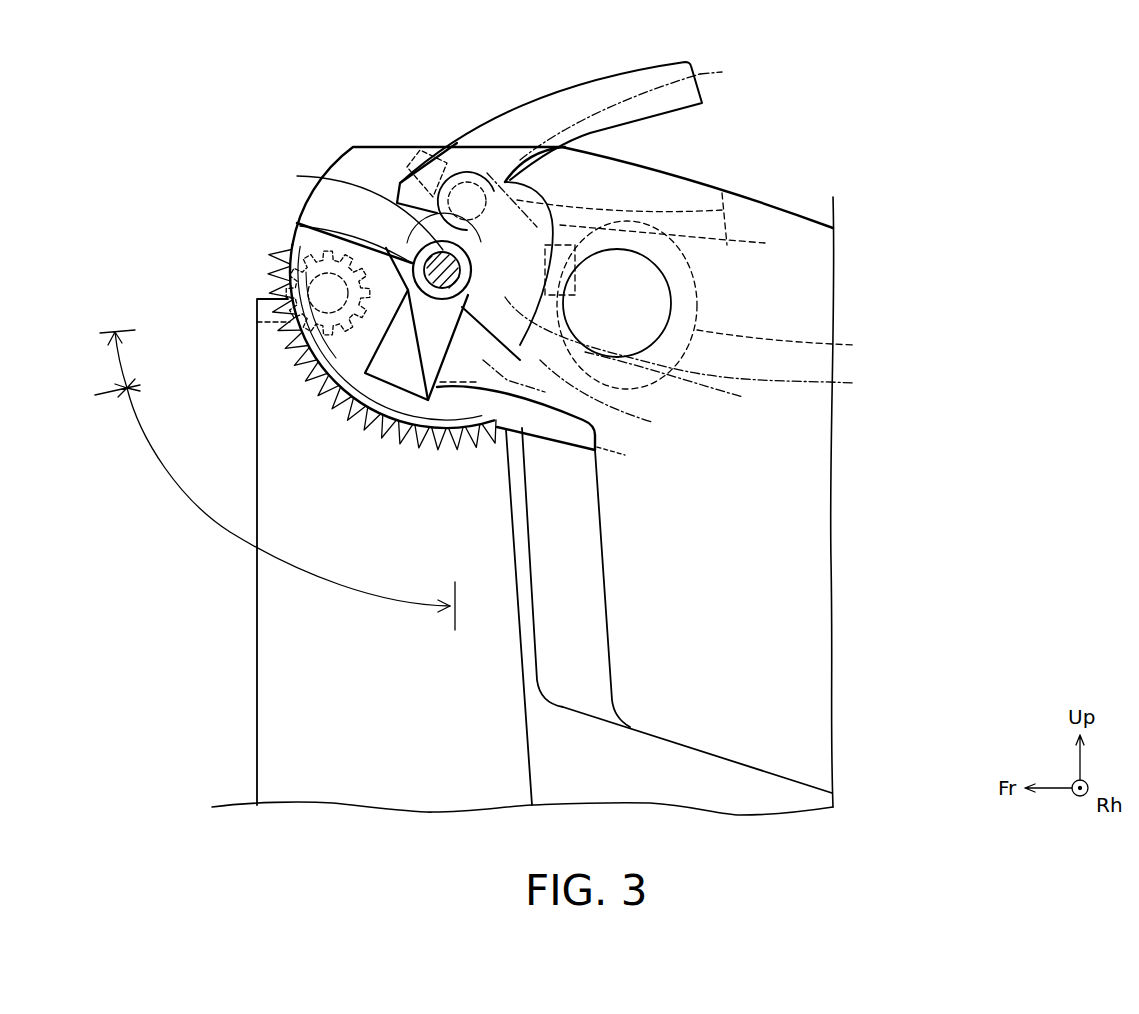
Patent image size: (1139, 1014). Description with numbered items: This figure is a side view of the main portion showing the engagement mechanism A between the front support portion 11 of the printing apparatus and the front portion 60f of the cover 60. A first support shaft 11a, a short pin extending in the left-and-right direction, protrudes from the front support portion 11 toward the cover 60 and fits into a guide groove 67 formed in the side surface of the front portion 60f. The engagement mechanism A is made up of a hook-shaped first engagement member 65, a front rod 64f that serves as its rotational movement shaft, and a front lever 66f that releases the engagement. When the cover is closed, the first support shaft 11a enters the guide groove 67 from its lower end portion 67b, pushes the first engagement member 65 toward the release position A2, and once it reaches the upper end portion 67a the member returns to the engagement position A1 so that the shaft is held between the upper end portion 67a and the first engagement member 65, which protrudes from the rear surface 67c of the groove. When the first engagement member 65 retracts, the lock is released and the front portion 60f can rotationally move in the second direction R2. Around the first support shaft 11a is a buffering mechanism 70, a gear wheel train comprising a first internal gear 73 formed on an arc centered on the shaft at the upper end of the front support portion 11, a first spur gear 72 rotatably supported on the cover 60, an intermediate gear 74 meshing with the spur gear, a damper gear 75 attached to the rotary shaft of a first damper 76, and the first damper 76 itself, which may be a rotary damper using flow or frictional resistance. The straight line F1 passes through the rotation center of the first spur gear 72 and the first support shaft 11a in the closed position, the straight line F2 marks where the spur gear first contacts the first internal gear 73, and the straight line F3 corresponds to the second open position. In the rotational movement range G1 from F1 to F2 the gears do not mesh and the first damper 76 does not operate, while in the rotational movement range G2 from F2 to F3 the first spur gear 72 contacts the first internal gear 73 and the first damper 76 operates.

The engagement mechanism A is at (315, 95).
The front portion of the cover 60f is at (451, 101).
The front lever 66f is at (630, 69).
The release position A2 is at (722, 72).
The front rod 64f is at (417, 150).
The upper end portion of the guide groove 67a is at (340, 180).
The first support shaft 11a is at (297, 222).
The first spur gear 72 is at (283, 270).
The cover 60 is at (796, 314).
The straight line F1 is at (110, 330).
The rotational movement range G1 is at (118, 370).
The first internal gear 73 is at (300, 360).
The first damper 76 is at (792, 344).
The damper gear 75 is at (696, 346).
The intermediate gear 74 is at (668, 314).
The straight line F2 is at (112, 405).
The engagement position A1 is at (625, 455).
The guide groove 67 is at (400, 330).
The lower end portion of the guide groove 67b is at (435, 330).
The first engagement member 65 is at (429, 322).
The rear surface of the guide groove 67c is at (485, 428).
The buffering mechanism 70 is at (757, 441).
The rotational movement range G2 is at (212, 525).
The straight line F3 is at (462, 603).
The front support portion 11 is at (340, 741).
The second direction R2 is at (186, 105).